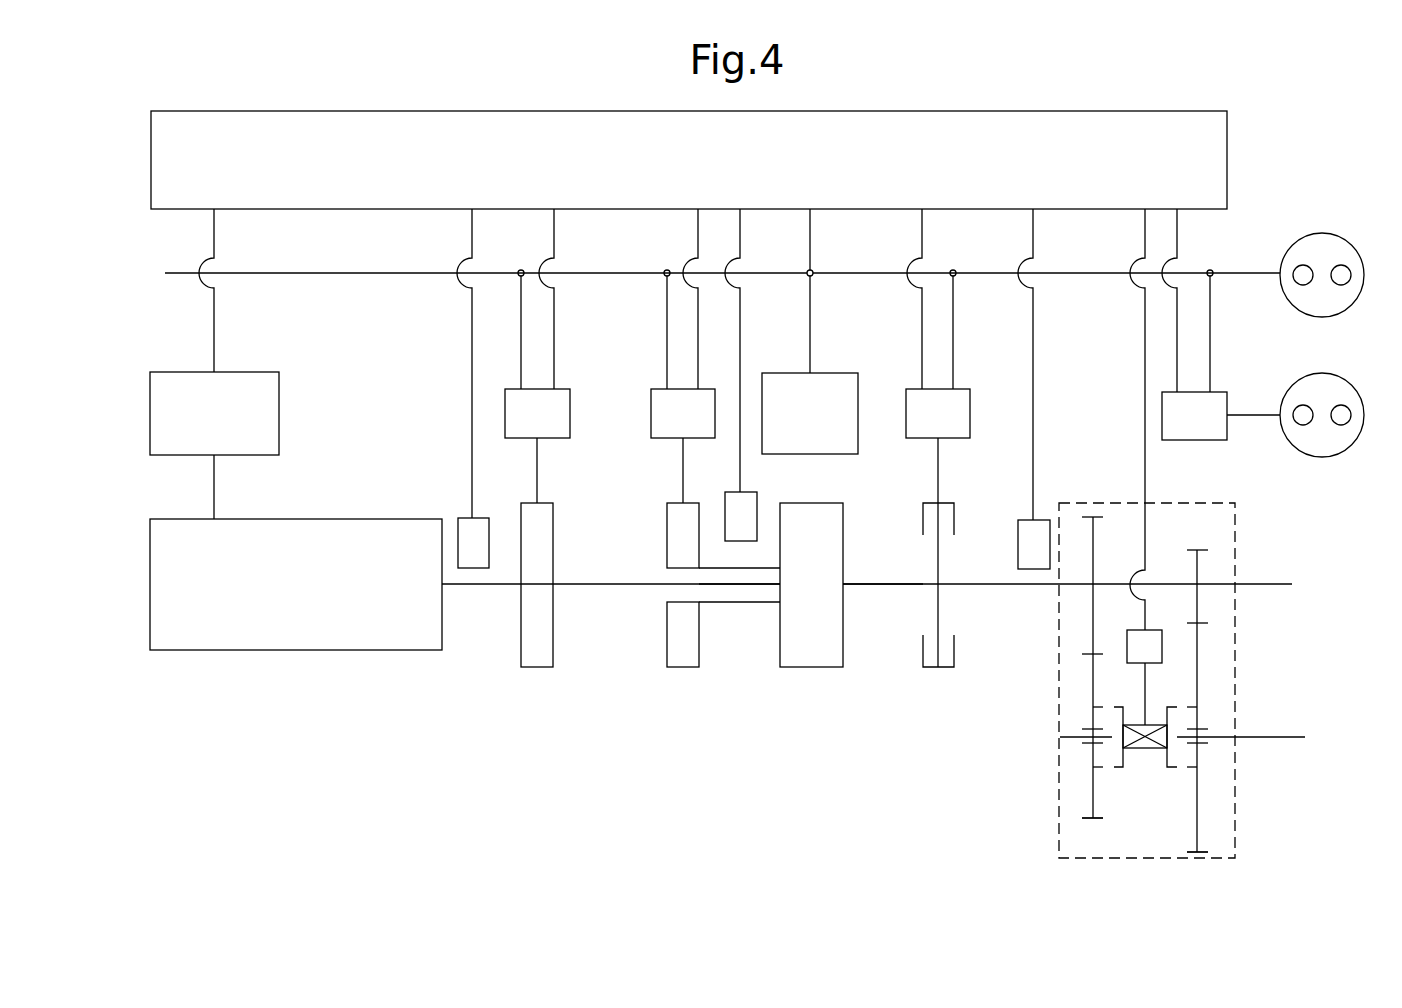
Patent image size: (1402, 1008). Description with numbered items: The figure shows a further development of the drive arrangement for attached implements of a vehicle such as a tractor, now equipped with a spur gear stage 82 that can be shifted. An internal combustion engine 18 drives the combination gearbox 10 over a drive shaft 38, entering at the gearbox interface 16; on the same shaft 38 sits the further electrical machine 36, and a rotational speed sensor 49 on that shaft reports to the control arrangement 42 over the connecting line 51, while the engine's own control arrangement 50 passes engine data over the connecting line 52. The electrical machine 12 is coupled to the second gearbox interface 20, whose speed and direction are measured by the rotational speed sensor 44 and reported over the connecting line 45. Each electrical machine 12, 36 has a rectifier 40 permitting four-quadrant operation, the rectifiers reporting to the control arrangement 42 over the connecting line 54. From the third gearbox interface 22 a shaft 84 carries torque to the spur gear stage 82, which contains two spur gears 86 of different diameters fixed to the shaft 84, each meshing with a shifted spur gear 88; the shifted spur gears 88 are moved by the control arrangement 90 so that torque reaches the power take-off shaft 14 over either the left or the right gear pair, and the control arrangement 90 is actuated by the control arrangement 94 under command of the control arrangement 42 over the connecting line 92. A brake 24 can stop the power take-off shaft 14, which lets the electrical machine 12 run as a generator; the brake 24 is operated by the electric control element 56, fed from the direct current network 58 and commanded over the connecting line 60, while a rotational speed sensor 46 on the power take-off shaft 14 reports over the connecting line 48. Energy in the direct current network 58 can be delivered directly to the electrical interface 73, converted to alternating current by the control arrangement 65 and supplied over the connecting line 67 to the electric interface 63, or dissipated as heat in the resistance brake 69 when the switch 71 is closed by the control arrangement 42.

The combination gearbox 10 is at (796, 599).
The electrical machine 12 is at (683, 670).
The power take-off shaft 14 is at (1265, 742).
The gearbox interface 16 is at (778, 590).
The internal combustion engine 18 is at (278, 604).
The second gearbox interface 20 is at (722, 572).
The third gearbox interface 22 is at (845, 588).
The brake 24 is at (962, 612).
The further electrical machine 36 is at (540, 668).
The drive shaft 38 is at (485, 592).
The rectifier 40 is at (523, 427).
The control arrangement 42 is at (671, 177).
The rotational speed sensor 44 is at (728, 531).
The connecting line 45 is at (740, 363).
The rotational speed sensor 46 is at (1021, 559).
The connecting line 48 is at (1036, 397).
The rotational speed sensor 49 is at (460, 558).
The control arrangement of the internal combustion engine 50 is at (200, 425).
The connecting line 51 is at (472, 383).
The connecting line 52 is at (214, 333).
The connecting line 54 is at (554, 333).
The electric control element 56 is at (923, 427).
The direct current network 58 is at (1270, 272).
The connecting line 60 is at (922, 230).
The electric interface 63 is at (1335, 375).
The control arrangement 65 is at (1180, 426).
The connecting line 67 is at (1255, 417).
The resistance brake 69 is at (795, 427).
The switch 71 is at (813, 276).
The electrical interface 73 is at (1316, 233).
The spur gear stage 82 is at (1059, 762).
The shaft 84 is at (988, 583).
The spur gears 86 is at (1094, 538).
The shifted spur gears 88 is at (1076, 828).
The control arrangement 90 is at (1143, 750).
The connecting line 92 is at (1145, 332).
The control arrangement 94 is at (1132, 660).